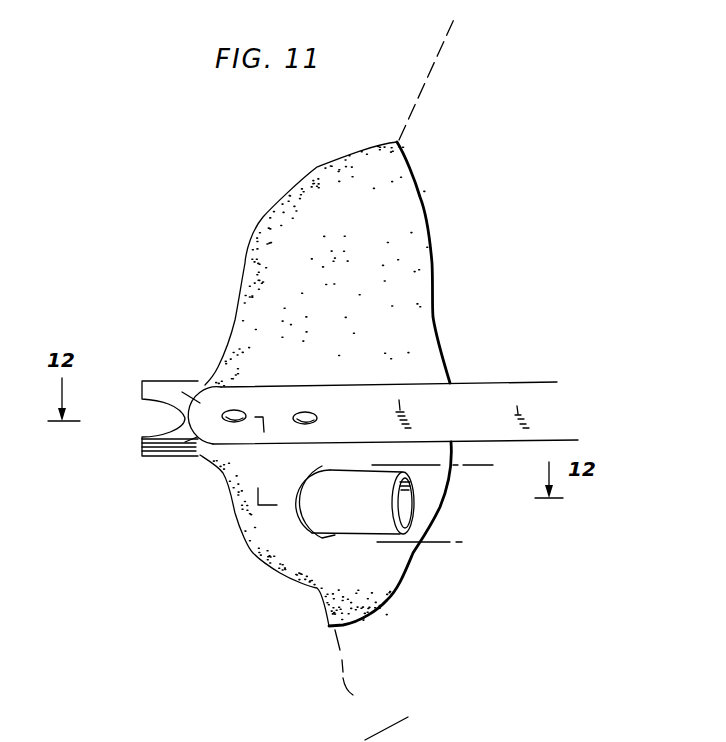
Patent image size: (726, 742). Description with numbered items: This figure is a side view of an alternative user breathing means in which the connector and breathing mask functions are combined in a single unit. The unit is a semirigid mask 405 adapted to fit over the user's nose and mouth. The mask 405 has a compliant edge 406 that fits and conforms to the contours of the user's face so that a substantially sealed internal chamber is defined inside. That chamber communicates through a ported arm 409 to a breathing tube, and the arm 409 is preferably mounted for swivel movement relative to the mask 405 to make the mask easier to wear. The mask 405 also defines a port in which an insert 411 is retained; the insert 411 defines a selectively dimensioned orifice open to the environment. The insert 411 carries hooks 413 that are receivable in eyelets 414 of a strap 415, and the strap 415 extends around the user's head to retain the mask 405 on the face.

The semirigid mask 405 is at (240, 266).
The compliant edge 406 is at (434, 268).
The ported arm 409 is at (345, 519).
The insert 411 is at (168, 456).
The hooks 413 is at (234, 410).
The eyelets 414 is at (306, 413).
The strap 415 is at (372, 392).